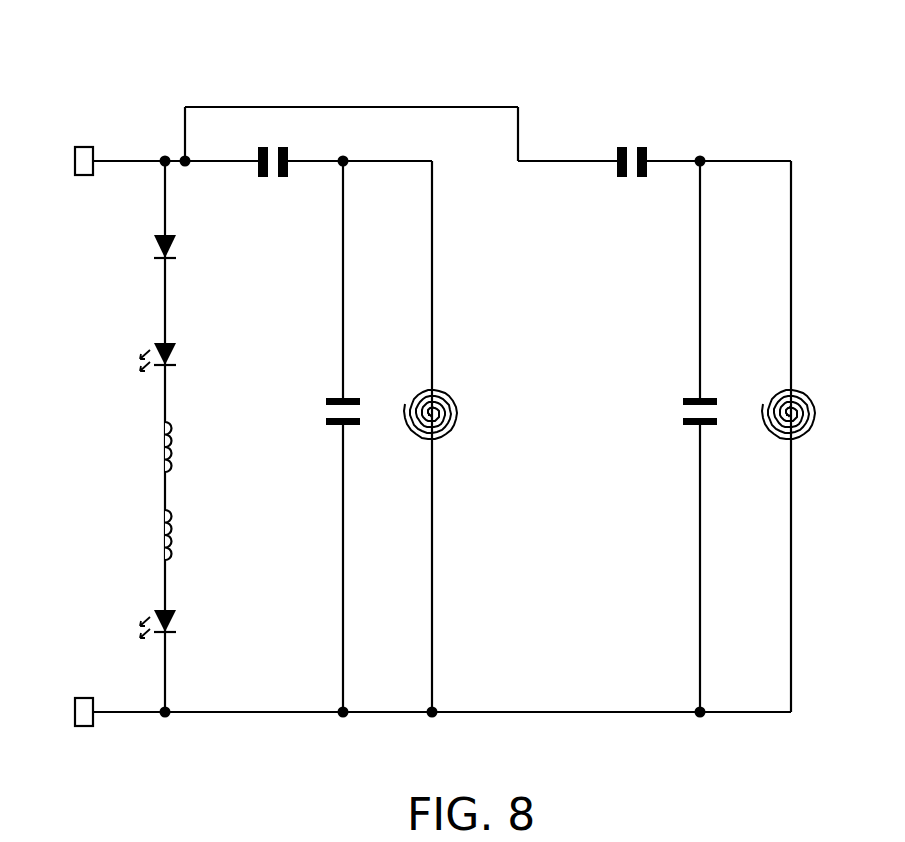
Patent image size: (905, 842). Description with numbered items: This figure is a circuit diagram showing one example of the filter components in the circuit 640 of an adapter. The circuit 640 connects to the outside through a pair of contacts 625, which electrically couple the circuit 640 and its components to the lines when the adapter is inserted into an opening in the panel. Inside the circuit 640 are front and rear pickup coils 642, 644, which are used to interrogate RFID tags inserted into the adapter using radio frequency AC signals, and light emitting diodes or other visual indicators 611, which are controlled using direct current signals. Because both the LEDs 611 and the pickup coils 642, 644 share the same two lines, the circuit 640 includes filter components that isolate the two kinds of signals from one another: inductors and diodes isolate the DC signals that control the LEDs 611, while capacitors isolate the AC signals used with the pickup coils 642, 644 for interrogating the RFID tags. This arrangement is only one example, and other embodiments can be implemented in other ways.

The circuit 640 is at (499, 44).
The contacts 625 is at (75, 161).
The light emitting diodes 611 is at (135, 345).
The front pickup coil 642 is at (456, 430).
The rear pickup coil 644 is at (814, 430).